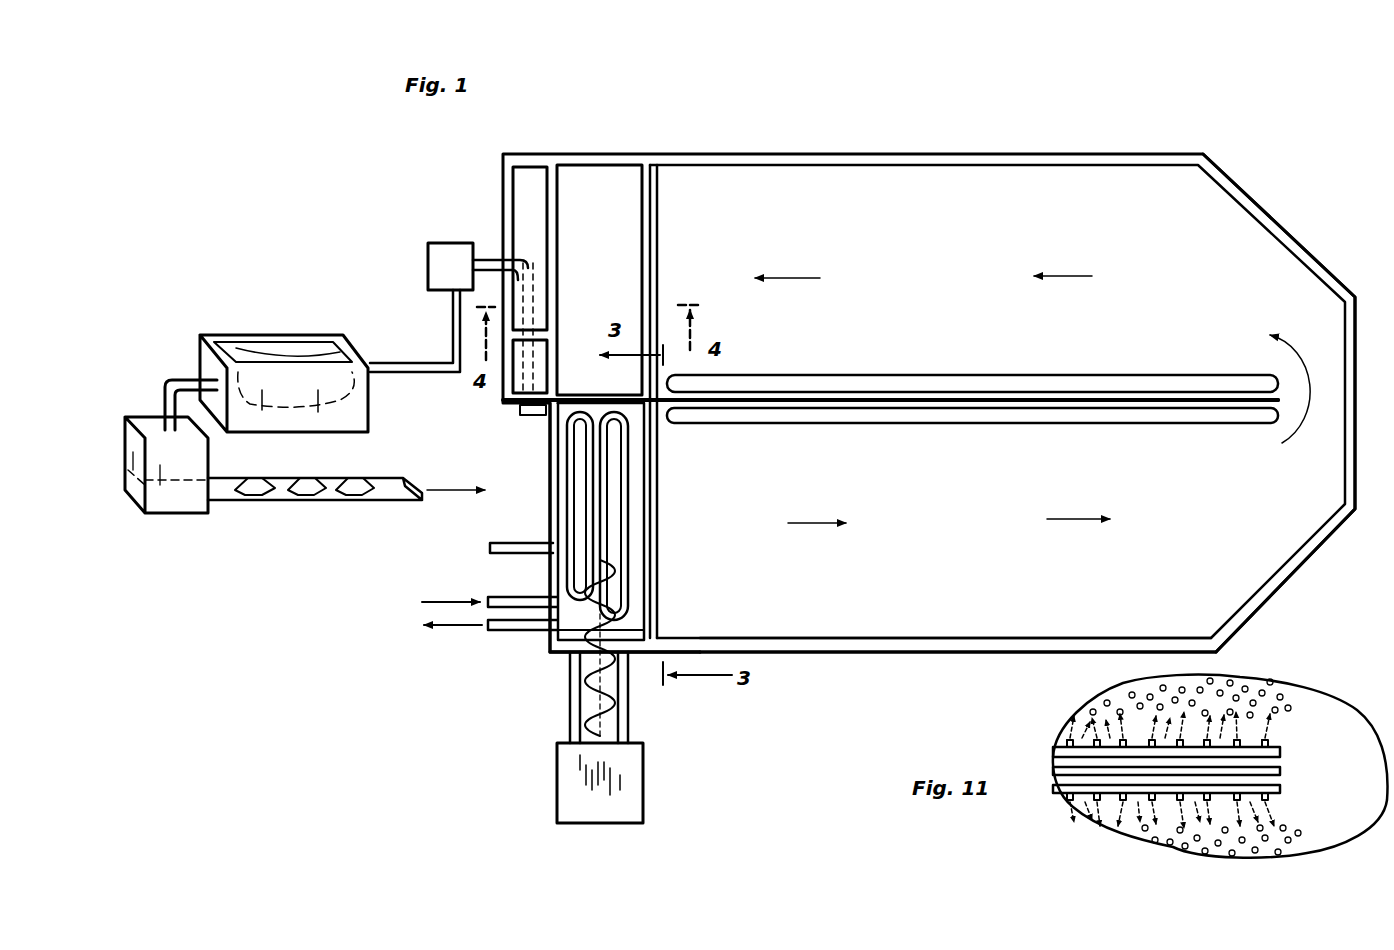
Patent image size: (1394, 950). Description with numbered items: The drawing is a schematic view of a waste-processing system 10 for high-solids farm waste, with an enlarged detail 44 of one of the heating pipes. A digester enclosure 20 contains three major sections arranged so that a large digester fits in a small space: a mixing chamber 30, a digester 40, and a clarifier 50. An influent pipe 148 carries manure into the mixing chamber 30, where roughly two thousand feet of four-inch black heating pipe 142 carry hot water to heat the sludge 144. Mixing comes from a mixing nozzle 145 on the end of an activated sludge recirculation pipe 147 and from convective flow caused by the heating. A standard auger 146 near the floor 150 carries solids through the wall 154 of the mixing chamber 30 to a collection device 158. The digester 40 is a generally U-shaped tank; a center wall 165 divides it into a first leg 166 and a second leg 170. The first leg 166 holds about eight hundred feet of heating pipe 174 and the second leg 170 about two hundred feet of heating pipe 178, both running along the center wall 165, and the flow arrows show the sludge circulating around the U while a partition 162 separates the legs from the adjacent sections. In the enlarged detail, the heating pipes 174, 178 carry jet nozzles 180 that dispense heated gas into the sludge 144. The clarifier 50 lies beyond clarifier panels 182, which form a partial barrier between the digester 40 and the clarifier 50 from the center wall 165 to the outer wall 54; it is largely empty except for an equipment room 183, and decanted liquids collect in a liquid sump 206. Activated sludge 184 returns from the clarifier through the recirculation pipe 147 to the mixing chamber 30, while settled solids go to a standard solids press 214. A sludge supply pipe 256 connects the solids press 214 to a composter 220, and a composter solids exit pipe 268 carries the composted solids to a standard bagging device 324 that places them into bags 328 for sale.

In FIG. 1, the dryer apparatus 10 is at (750, 118).
In FIG. 1, the digester enclosure 20 is at (1286, 590).
In FIG. 1, the mixing chamber 30 is at (550, 440).
In FIG. 1, the digester 40 is at (1018, 606).
In FIG. 11, the heating element assembly 44 is at (1220, 766).
In FIG. 1, the clarifier 50 is at (606, 175).
In FIG. 1, the outer wall 54 is at (930, 648).
In FIG. 1, the heating pipe 142 is at (573, 456).
In FIG. 1, the sludge 144 is at (565, 497).
In FIG. 1, the mixing nozzle 145 is at (568, 406).
In FIG. 1, the auger 146 is at (592, 682).
In FIG. 1, the activated sludge recirculation pipe 147 is at (520, 411).
In FIG. 1, the influent pipe 148 is at (495, 543).
In FIG. 1, the floor 150 is at (635, 633).
In FIG. 1, the wall 154 is at (550, 652).
In FIG. 1, the collection device 158 is at (630, 770).
In FIG. 1, the lower partition wall 162 is at (658, 448).
In FIG. 1, the center wall 165 is at (1010, 384).
In FIG. 11, the center wall 165 is at (1283, 771).
In FIG. 1, the first leg 166 is at (934, 470).
In FIG. 1, the second leg 170 is at (972, 230).
In FIG. 1, the heating pipe 174 is at (1160, 416).
In FIG. 11, the heating pipe 174 is at (1283, 789).
In FIG. 1, the heating pipe 178 is at (1096, 384).
In FIG. 11, the heating pipe 178 is at (1283, 752).
In FIG. 11, the jet nozzles 180 is at (1265, 741).
In FIG. 1, the clarifier panels 182 is at (658, 188).
In FIG. 1, the equipment room 183 is at (512, 372).
In FIG. 1, the activated sludge 184 is at (771, 206).
In FIG. 1, the liquid sump 206 is at (526, 165).
In FIG. 1, the solids press 214 is at (455, 228).
In FIG. 1, the composter 220 is at (300, 335).
In FIG. 1, the sludge supply pipe 256 is at (410, 363).
In FIG. 1, the composter solids exit pipe 268 is at (192, 380).
In FIG. 1, the bagging device 324 is at (175, 458).
In FIG. 1, the bags 328 is at (300, 477).